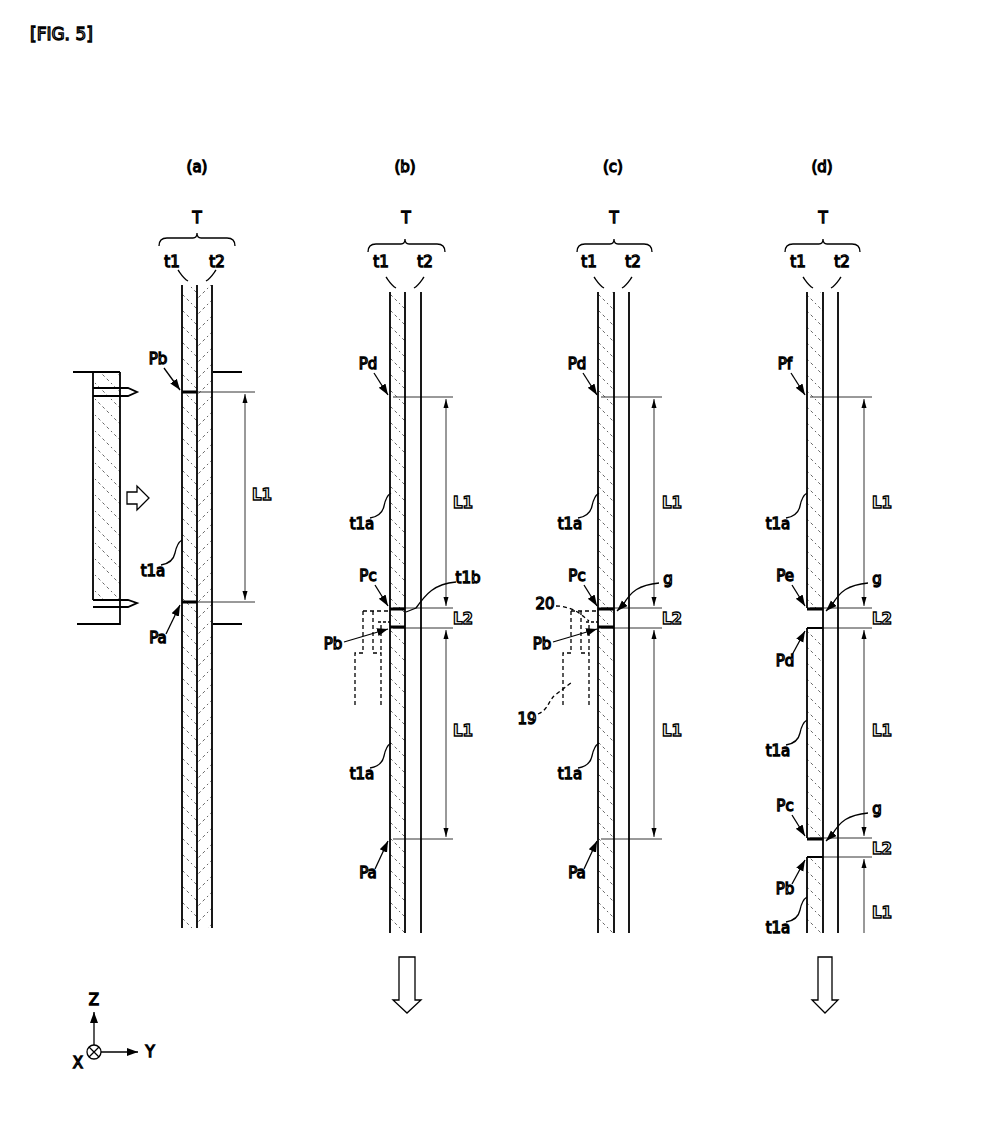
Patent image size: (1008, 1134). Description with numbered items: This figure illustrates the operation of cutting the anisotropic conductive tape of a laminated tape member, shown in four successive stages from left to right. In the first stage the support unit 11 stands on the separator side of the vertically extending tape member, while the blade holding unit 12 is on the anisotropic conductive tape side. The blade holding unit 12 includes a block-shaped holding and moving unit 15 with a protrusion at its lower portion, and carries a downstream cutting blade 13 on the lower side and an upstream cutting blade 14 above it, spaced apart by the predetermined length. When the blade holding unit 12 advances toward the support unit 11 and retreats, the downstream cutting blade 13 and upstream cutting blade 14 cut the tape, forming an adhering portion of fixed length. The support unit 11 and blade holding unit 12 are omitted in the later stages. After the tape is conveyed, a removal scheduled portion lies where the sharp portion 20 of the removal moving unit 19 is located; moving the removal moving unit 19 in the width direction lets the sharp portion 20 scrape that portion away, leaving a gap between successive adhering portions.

The support unit 11 is at (224, 372).
The blade holding unit 12 is at (83, 358).
The downstream cutting blade 13 is at (128, 608).
The upstream cutting blade 14 is at (130, 390).
The holding and moving unit 15 is at (80, 618).
The removal moving unit 19 is at (363, 682).
The sharp portion 20 is at (381, 621).